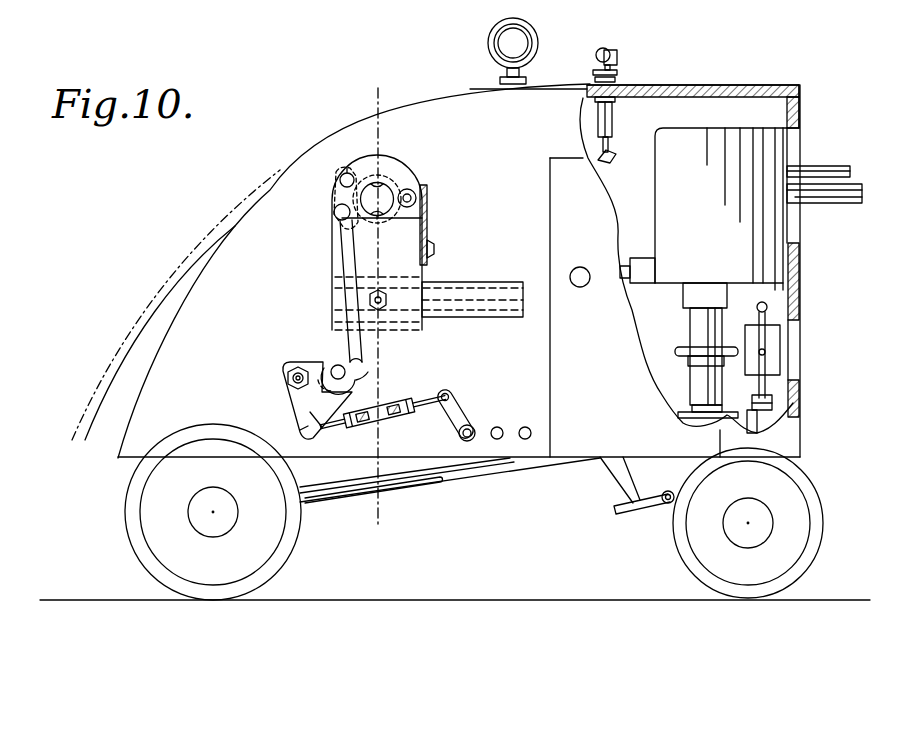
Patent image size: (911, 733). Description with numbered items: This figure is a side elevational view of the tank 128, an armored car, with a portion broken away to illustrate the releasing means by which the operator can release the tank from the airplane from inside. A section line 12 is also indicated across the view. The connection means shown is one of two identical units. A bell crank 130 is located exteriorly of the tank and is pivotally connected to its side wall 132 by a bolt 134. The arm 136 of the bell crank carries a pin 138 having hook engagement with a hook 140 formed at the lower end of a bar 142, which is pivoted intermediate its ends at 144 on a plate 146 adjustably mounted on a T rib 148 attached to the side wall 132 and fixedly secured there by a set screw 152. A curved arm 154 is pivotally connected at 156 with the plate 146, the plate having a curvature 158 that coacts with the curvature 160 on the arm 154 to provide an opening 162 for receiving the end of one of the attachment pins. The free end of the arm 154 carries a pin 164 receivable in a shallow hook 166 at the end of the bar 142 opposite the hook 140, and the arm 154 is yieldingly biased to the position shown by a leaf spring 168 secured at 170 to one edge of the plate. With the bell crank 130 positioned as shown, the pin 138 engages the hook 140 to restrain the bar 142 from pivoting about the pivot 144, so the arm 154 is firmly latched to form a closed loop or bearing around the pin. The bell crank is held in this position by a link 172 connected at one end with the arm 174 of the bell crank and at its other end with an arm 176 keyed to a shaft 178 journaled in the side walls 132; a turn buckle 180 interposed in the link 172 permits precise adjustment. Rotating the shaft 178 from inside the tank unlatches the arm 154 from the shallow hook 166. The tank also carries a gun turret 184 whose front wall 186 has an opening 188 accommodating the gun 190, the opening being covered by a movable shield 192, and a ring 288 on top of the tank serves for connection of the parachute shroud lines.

The section line 12 is at (392, 96).
The tank 128 is at (715, 82).
The bell crank 130 is at (305, 400).
The side wall 132 is at (578, 128).
The bolt 134 is at (287, 375).
The arm 136 is at (315, 362).
The pin 138 is at (338, 364).
The hook 140 is at (368, 375).
The bar 142 is at (336, 258).
The pivot 144 is at (334, 212).
The plate 146 is at (402, 318).
The T rib 148 is at (505, 286).
The set screw 152 is at (368, 300).
The curved arm 154 is at (390, 163).
The pivotal connection 156 is at (416, 198).
The curvature 158 is at (382, 213).
The curvature 160 is at (393, 183).
The opening 162 is at (404, 188).
The pin 164 is at (347, 172).
The shallow hook 166 is at (340, 177).
The leaf spring 168 is at (427, 215).
The spring securement 170 is at (442, 256).
The link 172 is at (328, 426).
The arm 174 is at (310, 413).
The arm 176 is at (452, 401).
The shaft 178 is at (469, 425).
The turn buckle 180 is at (386, 422).
The gun turret 184 is at (682, 270).
The front wall 186 is at (800, 105).
The opening 188 is at (799, 128).
The gun 190 is at (843, 201).
The movable shield 192 is at (704, 129).
The ring 288 is at (528, 32).